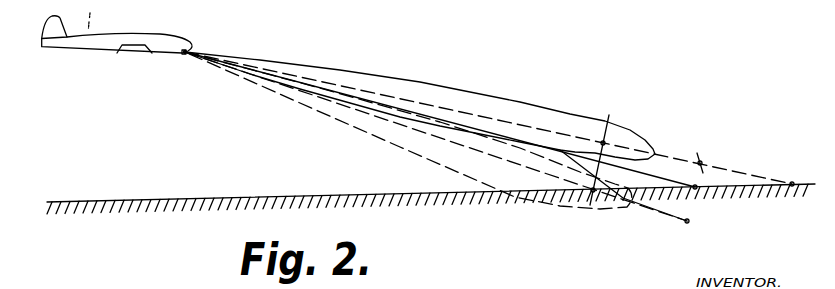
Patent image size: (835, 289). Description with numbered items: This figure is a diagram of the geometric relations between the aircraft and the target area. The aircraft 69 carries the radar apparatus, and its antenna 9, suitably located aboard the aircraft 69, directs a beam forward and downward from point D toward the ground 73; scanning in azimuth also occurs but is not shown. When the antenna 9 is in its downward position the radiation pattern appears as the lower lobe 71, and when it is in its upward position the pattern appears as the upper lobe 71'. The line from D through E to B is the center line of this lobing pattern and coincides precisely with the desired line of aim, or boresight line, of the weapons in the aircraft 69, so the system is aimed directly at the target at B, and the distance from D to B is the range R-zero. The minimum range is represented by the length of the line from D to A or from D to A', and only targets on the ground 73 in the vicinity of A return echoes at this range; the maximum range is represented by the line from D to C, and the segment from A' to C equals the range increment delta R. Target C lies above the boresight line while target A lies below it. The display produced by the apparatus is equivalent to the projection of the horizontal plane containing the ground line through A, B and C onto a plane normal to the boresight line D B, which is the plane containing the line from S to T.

The aircraft 69 is at (117, 26).
The antenna 9 is at (181, 55).
The antenna point D is at (187, 56).
The upper lobe 71' is at (488, 113).
The lower lobe 71 is at (436, 136).
The ground 73 is at (431, 189).
The point E is at (623, 158).
The point A' is at (618, 152).
The point A is at (576, 211).
The point B is at (696, 189).
The point C is at (782, 200).
The point T is at (710, 154).
The point S is at (685, 222).